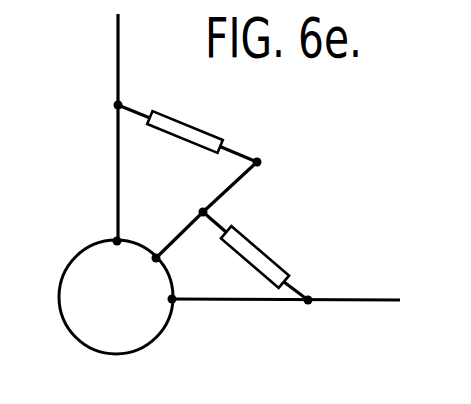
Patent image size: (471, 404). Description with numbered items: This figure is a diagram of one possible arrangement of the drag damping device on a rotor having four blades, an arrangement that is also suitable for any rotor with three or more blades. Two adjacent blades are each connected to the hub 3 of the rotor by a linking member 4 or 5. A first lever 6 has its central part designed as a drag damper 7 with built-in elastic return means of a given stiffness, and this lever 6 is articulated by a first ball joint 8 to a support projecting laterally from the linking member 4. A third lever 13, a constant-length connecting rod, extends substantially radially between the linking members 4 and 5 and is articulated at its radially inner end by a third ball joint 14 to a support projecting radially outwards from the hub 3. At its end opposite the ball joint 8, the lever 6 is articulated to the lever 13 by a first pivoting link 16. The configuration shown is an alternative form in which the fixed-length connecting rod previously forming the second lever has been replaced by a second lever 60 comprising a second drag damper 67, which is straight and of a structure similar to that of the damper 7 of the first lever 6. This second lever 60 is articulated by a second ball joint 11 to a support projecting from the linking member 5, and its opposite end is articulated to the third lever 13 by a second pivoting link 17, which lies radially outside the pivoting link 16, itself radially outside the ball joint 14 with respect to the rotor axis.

The hub 3 is at (87, 250).
The linking member 4 is at (205, 302).
The linking member 5 is at (117, 48).
The first lever 6 is at (300, 290).
The drag damper 7 is at (240, 243).
The first ball joint 8 is at (308, 305).
The second ball joint 11 is at (116, 107).
The third lever 13 is at (168, 245).
The third ball joint 14 is at (170, 298).
The first pivoting link 16 is at (200, 204).
The second pivoting link 17 is at (258, 162).
The second lever 60 is at (140, 106).
The second drag damper 67 is at (198, 133).